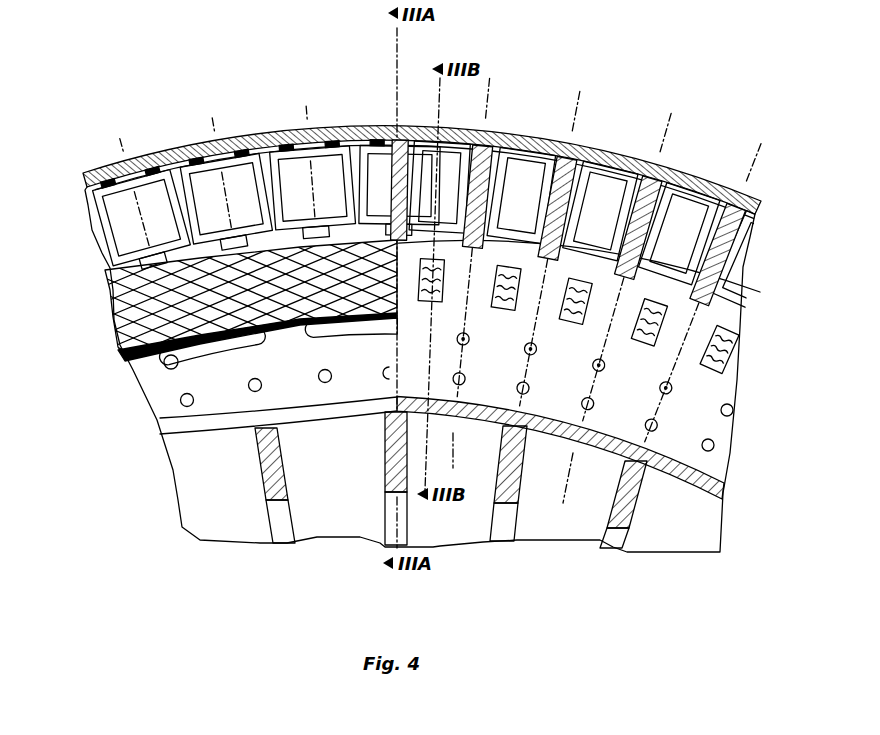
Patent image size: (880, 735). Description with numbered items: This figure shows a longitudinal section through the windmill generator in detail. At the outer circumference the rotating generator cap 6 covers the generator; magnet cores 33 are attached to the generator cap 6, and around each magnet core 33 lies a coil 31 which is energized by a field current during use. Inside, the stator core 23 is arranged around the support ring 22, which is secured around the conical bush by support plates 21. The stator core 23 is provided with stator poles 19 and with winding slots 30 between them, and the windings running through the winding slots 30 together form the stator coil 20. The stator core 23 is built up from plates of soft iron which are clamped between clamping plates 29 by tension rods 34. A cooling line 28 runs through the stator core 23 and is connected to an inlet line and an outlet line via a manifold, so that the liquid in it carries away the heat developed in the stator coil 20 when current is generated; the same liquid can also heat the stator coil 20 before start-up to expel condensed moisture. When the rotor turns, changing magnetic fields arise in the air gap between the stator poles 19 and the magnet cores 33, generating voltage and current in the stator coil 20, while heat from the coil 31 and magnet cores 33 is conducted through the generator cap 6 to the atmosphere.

The generator cap 6 is at (650, 170).
The stator poles 19 is at (110, 272).
The stator coil 20 is at (114, 318).
The support plates 21 is at (386, 478).
The support ring 22 is at (550, 438).
The stator core 23 is at (568, 343).
The cooling line 28 is at (165, 360).
The clamping plates 29 is at (160, 422).
The winding slots 30 is at (703, 333).
The coil 31 is at (143, 150).
The magnet cores 33 is at (225, 133).
The tension rods 34 is at (180, 399).